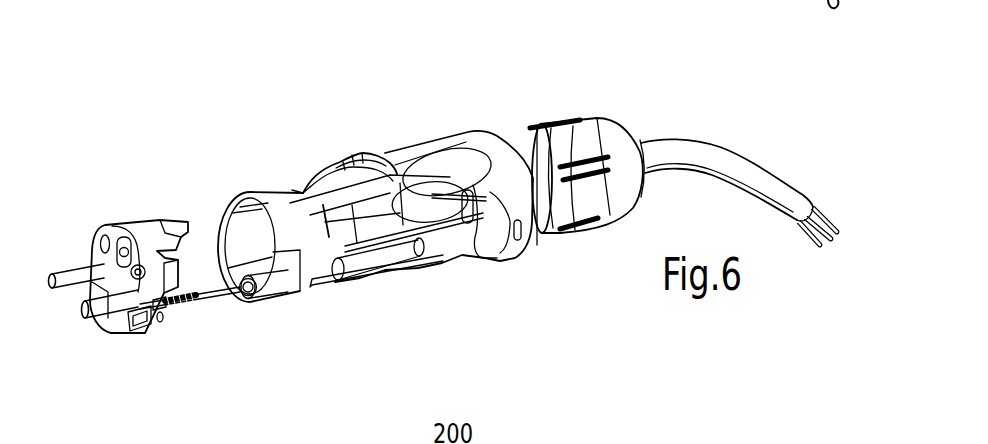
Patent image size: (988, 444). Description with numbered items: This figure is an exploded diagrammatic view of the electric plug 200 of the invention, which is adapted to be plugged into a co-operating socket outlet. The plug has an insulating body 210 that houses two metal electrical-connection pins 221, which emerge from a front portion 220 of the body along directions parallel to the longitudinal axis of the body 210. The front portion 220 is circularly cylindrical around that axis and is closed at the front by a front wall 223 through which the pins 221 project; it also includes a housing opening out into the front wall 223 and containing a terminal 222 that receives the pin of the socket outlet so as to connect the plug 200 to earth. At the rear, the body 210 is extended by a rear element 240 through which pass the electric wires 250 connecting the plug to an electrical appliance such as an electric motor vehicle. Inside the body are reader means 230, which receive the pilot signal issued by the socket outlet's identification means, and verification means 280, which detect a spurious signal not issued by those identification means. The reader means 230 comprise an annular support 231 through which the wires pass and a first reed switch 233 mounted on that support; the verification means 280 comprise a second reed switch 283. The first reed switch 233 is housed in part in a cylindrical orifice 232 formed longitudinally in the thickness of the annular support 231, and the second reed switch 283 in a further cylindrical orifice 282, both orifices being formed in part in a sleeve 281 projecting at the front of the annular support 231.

The electric plug 200 is at (444, 78).
The insulating body 210 is at (409, 160).
The front portion 220 is at (140, 222).
The metal electrical-connection pins 221 is at (80, 275).
The terminal 222 is at (105, 245).
The front wall 223 is at (117, 330).
The reader means 230 is at (214, 372).
The annular support 231 is at (284, 220).
The cylindrical orifice 232 is at (228, 295).
The first reed switch 233 is at (184, 312).
The rear element 240 is at (598, 125).
The electric wires 250 is at (710, 152).
The verification means 280 is at (369, 295).
The sleeve 281 is at (285, 283).
The cylindrical orifice 282 is at (247, 300).
The second reed switch 283 is at (412, 252).